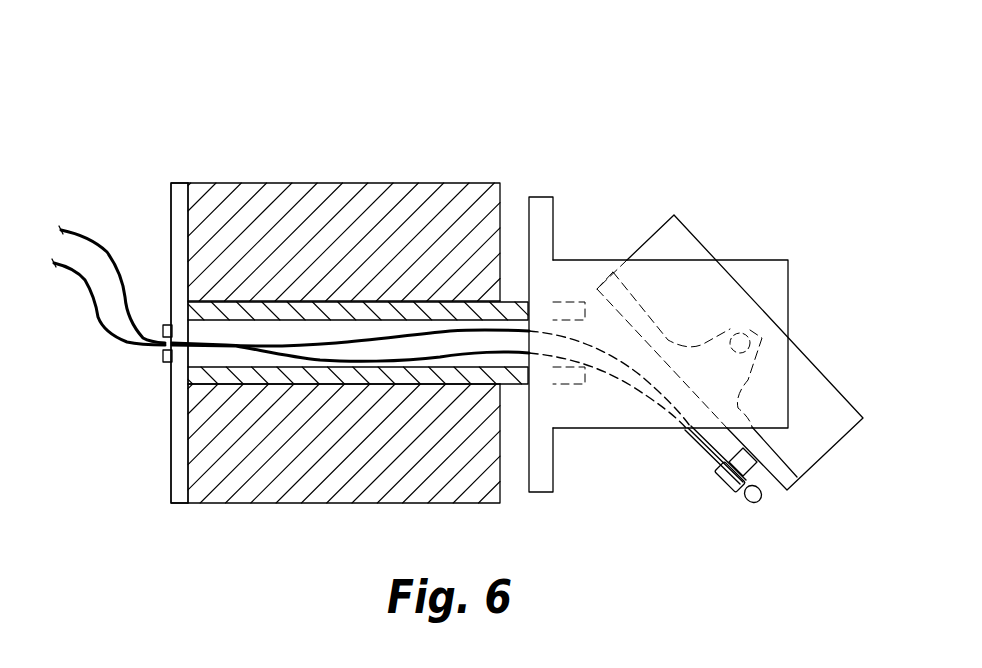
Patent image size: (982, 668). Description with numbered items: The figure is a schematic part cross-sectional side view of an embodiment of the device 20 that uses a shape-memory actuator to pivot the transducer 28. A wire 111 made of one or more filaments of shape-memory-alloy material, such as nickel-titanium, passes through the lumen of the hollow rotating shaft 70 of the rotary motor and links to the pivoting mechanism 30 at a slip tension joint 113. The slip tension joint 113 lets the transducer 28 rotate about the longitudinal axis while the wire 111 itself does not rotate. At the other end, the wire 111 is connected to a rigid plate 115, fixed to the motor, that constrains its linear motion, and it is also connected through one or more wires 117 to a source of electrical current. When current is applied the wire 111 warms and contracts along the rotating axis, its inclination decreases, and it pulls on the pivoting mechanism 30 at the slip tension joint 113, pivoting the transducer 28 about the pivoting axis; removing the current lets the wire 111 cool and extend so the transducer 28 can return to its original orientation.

The device 20 is at (400, 142).
The pivoting mechanism 30 is at (264, 240).
The rotating shaft 70 is at (333, 378).
The rigid plate 115 is at (171, 493).
The wire 111 is at (270, 358).
The wires 117 is at (100, 242).
The transducer 28 is at (853, 382).
The slip tension joint 113 is at (728, 491).